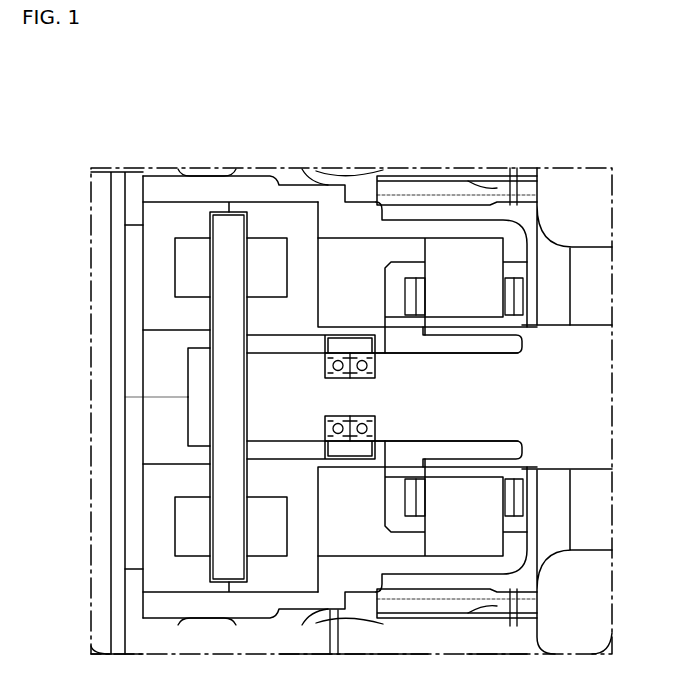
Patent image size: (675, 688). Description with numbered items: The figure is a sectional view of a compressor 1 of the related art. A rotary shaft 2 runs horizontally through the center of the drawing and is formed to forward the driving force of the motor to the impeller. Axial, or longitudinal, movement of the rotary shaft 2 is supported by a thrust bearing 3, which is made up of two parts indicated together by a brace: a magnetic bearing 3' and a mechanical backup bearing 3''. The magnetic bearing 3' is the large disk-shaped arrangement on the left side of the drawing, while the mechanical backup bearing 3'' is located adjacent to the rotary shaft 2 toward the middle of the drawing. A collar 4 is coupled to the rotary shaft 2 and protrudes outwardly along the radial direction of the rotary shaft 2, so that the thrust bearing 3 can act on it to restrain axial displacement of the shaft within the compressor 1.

The compressor 1 is at (563, 158).
The rotary shaft 2 is at (592, 410).
The thrust bearing 3 is at (314, 357).
The magnetic bearing 3' is at (237, 382).
The mechanical backup bearing 3'' is at (392, 368).
The collar 4 is at (220, 316).